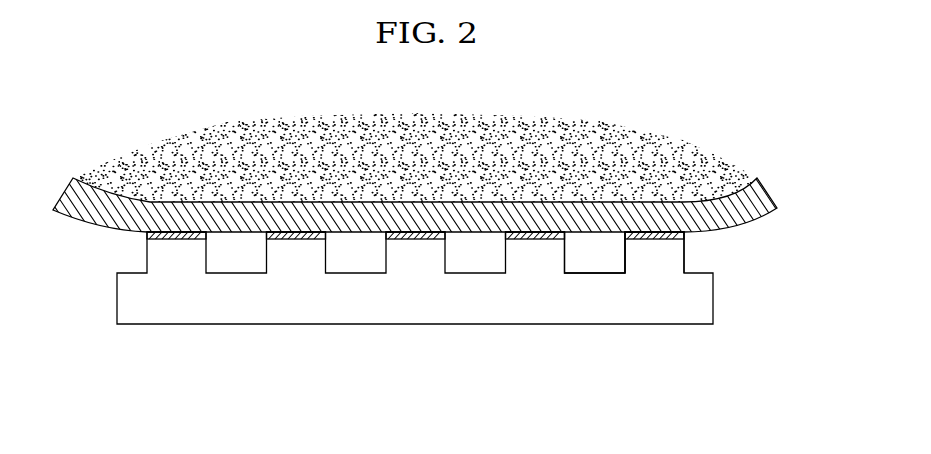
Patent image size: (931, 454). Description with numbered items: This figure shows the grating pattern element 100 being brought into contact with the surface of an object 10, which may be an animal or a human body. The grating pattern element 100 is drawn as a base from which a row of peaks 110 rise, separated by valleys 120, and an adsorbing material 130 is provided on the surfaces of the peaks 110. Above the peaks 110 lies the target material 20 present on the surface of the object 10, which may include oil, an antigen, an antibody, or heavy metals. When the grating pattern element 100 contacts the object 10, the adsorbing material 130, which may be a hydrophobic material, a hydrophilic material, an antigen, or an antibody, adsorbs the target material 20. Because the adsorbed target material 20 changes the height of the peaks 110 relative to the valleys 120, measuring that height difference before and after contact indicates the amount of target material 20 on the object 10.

The object 10 is at (415, 157).
The target material 20 is at (765, 212).
The grating pattern element 100 is at (742, 310).
The peaks 110 is at (657, 255).
The valleys 120 is at (585, 273).
The adsorbing material 130 is at (684, 240).